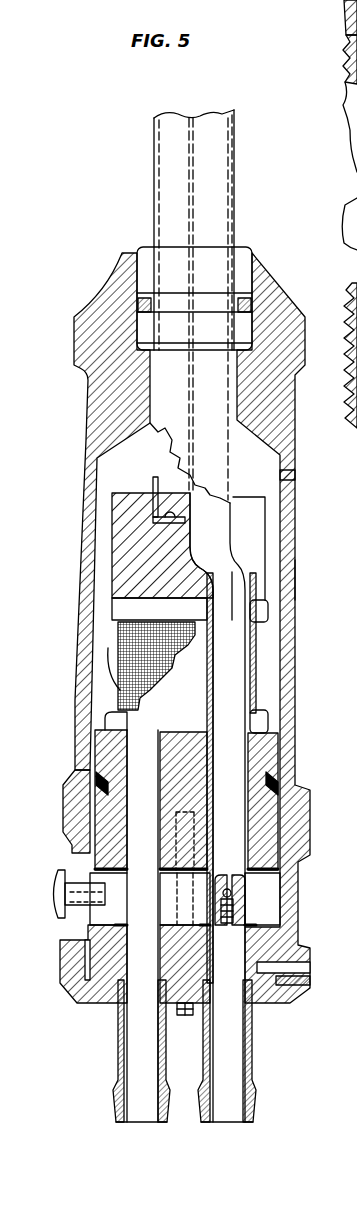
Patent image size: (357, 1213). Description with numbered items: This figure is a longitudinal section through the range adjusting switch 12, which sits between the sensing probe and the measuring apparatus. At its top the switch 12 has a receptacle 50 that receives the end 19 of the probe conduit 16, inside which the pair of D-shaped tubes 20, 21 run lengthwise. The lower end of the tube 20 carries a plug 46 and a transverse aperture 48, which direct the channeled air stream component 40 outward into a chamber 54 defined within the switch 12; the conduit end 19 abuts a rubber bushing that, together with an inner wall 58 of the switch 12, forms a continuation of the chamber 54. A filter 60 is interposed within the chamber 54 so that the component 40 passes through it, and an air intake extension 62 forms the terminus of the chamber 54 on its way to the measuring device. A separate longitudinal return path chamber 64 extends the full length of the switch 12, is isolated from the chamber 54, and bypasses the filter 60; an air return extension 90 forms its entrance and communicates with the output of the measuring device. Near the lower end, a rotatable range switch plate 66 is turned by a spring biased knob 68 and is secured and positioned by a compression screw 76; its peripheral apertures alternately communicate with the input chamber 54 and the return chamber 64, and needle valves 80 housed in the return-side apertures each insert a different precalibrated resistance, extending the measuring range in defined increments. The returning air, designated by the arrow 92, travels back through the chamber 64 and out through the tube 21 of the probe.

The range adjusting switch 12 is at (356, 600).
The conduit 16 is at (154, 163).
The end of conduit 19 is at (173, 548).
The tube 20 is at (168, 213).
The tube 21 is at (210, 207).
The channeled air stream component 40 is at (174, 98).
The plug 46 is at (162, 556).
The transverse aperture 48 is at (110, 430).
The receptacle 50 is at (253, 257).
The chamber 54 is at (122, 455).
The inner wall 58 is at (97, 515).
The filter 60 is at (118, 638).
The air intake extension 62 is at (118, 1035).
The return path chamber 64 is at (235, 657).
The range switch plate 66 is at (270, 892).
The spring biased knob 68 is at (52, 888).
The compression screw 76 is at (187, 1015).
The needle valve 80 is at (236, 912).
The air return extension 90 is at (252, 1062).
The arrow 92 is at (213, 162).